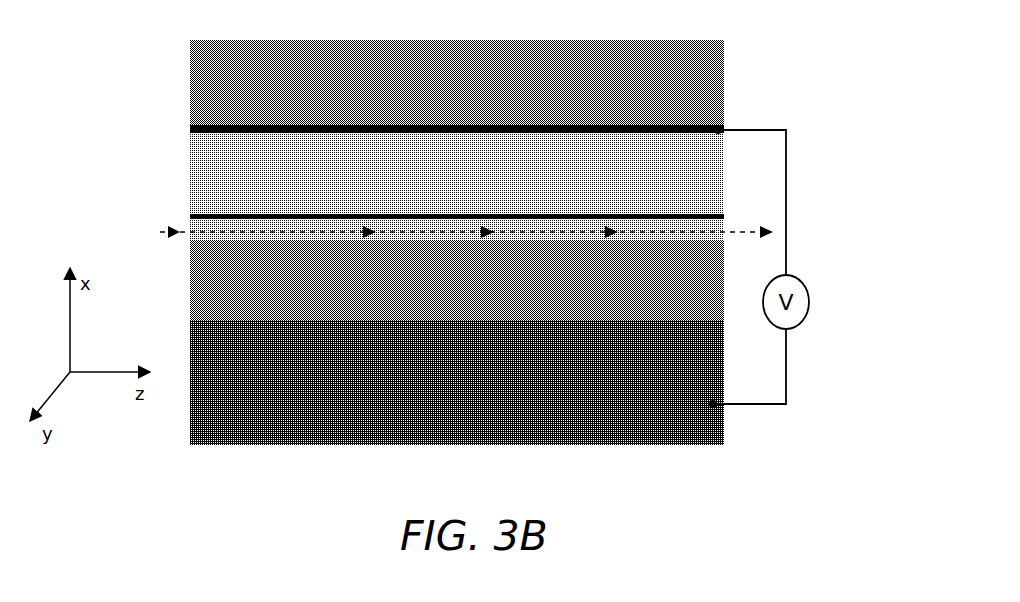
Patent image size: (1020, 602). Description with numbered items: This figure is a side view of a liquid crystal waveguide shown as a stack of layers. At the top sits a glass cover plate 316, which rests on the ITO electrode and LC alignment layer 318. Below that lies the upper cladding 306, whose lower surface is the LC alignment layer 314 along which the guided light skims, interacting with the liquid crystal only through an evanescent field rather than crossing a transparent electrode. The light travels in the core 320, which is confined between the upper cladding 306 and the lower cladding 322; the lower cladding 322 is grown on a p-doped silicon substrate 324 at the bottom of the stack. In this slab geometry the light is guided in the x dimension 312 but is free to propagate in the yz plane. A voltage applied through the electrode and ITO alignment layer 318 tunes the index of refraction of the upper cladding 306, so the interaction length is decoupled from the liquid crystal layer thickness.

The upper cladding 306 is at (457, 173).
The x dimension 312 is at (389, 229).
The LC alignment layer 314 is at (213, 209).
The glass cover plate 316 is at (457, 83).
The ITO/electrode and LC alignment layer 318 is at (664, 118).
The core 320 is at (457, 233).
The lower cladding 322 is at (457, 280).
The p-doped silicon substrate 324 is at (457, 382).